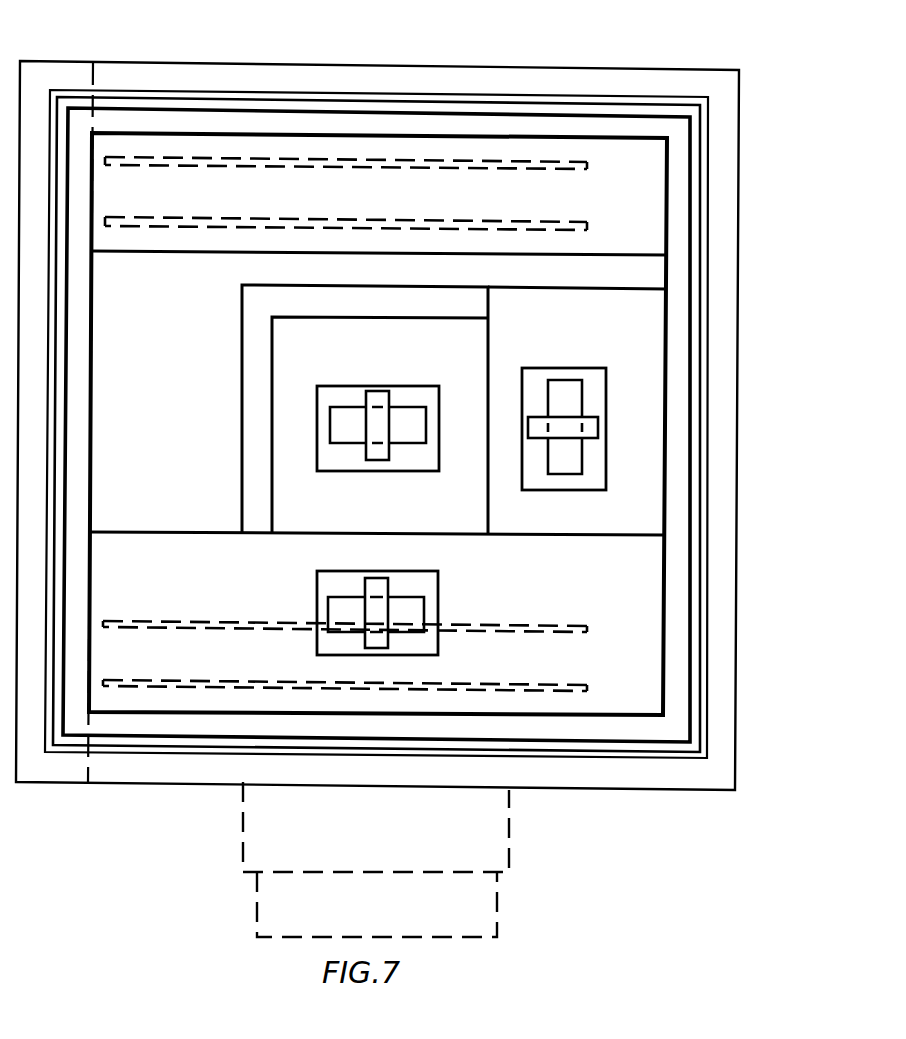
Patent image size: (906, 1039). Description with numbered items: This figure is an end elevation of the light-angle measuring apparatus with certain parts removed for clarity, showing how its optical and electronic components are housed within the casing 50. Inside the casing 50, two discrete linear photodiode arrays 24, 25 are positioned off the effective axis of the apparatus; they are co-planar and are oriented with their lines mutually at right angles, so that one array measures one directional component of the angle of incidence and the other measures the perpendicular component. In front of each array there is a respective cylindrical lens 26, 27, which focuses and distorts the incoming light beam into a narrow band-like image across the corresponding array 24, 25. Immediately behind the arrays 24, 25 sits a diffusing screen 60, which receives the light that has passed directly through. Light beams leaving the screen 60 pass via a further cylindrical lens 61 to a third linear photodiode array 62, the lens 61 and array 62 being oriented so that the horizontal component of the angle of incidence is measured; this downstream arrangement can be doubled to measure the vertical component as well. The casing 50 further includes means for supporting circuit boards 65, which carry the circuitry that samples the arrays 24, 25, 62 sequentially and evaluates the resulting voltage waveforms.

The casing 50 is at (519, 68).
The circuit boards 65 is at (302, 164).
The diffusing screen 60 is at (309, 318).
The cylindrical lens 61 is at (388, 398).
The third linear photodiode array 62 is at (418, 427).
The linear photodiode array 25 is at (570, 402).
The cylindrical lens 27 is at (590, 430).
The linear photodiode array 24 is at (417, 613).
The cylindrical lens 26 is at (368, 585).